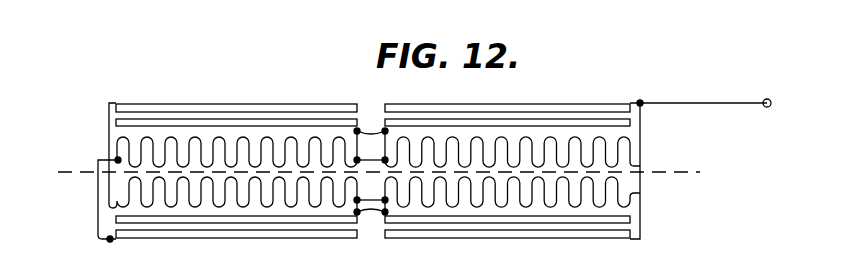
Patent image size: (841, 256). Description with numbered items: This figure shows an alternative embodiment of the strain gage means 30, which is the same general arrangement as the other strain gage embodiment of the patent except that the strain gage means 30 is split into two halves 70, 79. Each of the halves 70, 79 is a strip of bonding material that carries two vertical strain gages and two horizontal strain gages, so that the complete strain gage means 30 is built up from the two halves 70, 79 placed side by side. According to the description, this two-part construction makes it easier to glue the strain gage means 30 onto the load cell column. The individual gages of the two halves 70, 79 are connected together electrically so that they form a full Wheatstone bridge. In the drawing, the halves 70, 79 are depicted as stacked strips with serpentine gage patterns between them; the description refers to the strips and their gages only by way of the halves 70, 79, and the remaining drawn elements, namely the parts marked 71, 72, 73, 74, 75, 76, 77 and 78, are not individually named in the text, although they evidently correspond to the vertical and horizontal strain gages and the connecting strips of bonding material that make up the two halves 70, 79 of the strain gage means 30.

The strain gage means 30 is at (568, 92).
The half of strain gage means 70 is at (222, 92).
The upper left conductor strip 71 is at (116, 111).
The upper left serpentine resistor 72 is at (117, 148).
The lower left serpentine resistor 73 is at (117, 203).
The lower left conductor strip 74 is at (117, 229).
The upper right conductor strip 75 is at (627, 114).
The upper right serpentine resistor 76 is at (632, 160).
The lower right serpentine resistor 77 is at (623, 194).
The lower right conductor strip 78 is at (628, 226).
The half of strain gage means 79 is at (519, 98).